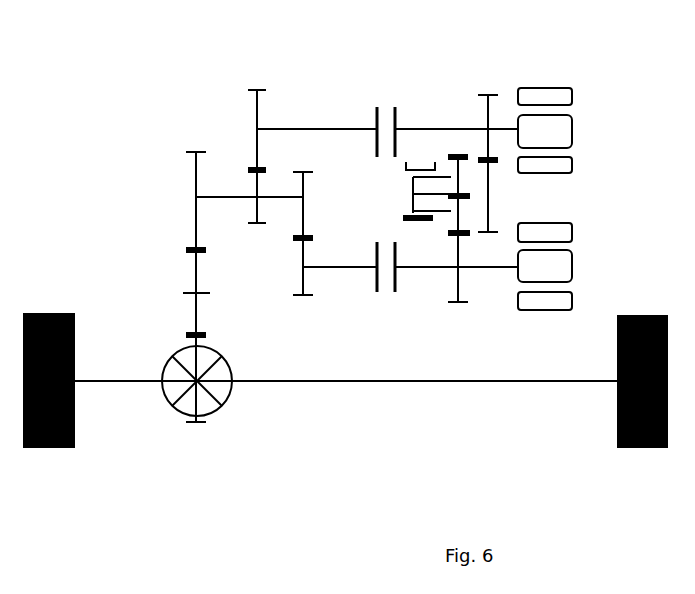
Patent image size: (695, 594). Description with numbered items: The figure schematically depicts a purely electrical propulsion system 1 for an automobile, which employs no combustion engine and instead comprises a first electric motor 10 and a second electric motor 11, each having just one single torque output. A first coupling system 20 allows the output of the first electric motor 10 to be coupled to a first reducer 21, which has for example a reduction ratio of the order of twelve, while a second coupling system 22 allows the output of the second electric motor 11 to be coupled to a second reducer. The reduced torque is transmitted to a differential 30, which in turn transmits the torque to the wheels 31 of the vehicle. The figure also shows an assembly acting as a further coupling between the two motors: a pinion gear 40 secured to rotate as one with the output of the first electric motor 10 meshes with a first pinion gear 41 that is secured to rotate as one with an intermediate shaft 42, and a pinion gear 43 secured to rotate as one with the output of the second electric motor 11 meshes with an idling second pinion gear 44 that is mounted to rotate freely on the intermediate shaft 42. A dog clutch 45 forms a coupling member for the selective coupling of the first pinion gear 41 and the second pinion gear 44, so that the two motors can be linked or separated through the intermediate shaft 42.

The propulsion system 1 is at (93, 167).
The first electric motor 10 is at (555, 92).
The second electric motor 11 is at (563, 237).
The first coupling system 20 is at (386, 112).
The first reducer 21 is at (257, 112).
The second coupling system 22 is at (303, 214).
The differential 30 is at (220, 386).
The wheels 31 is at (75, 440).
The pinion gear 40 is at (487, 121).
The first pinion gear 41 is at (490, 178).
The intermediate shaft 42 is at (482, 195).
The pinion gear 43 is at (457, 280).
The second pinion gear 44 is at (457, 222).
The dog clutch 45 is at (410, 185).